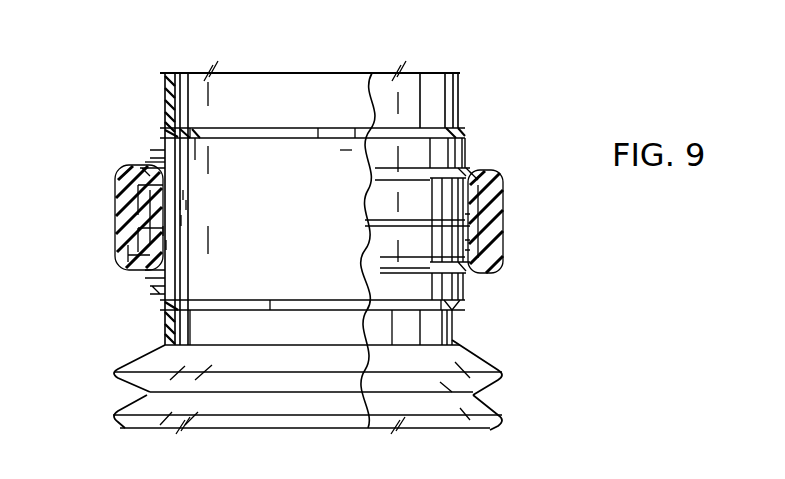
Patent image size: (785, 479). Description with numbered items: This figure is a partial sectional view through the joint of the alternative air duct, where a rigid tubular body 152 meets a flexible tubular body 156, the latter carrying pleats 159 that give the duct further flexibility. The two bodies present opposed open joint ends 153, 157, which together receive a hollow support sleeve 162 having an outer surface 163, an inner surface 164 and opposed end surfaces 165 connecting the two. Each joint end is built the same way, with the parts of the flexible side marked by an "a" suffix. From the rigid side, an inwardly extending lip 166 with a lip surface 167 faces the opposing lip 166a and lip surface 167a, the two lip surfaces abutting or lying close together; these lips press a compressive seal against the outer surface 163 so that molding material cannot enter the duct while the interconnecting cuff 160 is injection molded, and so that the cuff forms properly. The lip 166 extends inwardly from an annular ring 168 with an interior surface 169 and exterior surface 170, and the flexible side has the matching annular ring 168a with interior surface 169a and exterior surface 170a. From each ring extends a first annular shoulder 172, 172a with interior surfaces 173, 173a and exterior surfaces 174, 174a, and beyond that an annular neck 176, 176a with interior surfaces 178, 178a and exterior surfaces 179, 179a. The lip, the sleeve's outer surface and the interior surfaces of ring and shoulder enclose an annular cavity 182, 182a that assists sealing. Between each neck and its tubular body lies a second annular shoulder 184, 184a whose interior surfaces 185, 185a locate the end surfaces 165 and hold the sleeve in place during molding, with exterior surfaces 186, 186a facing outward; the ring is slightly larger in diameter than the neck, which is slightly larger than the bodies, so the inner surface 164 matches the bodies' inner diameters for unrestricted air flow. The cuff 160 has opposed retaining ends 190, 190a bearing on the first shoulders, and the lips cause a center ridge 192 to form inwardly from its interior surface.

The tubular body 152 is at (465, 85).
The open joint end 153 is at (472, 165).
The flexible tubular body 156 is at (505, 370).
The open joint end 157 is at (463, 298).
The pleats 159 is at (478, 410).
The interconnecting cuff 160 is at (507, 238).
The support sleeve 162 is at (200, 128).
The outer surface 163 is at (346, 150).
The inner surface 164 is at (182, 205).
The end surfaces 165 is at (358, 133).
The lip 166 is at (188, 204).
The lip 166a is at (183, 220).
The lip surface 167 is at (397, 225).
The lip surface 167a is at (380, 222).
The annular ring 168 is at (125, 182).
The annular ring 168a is at (135, 250).
The interior surface 169 is at (185, 197).
The interior surface 169a is at (165, 230).
The exterior surface 170 is at (467, 197).
The exterior surface 170a is at (465, 245).
The annular shoulder 172 is at (150, 162).
The annular shoulder 172a is at (160, 278).
The interior surface 173 is at (195, 160).
The interior surface 173a is at (168, 245).
The exterior surface 174 is at (142, 170).
The exterior surface 174a is at (426, 268).
The annular neck 176 is at (158, 152).
The annular neck 176a is at (158, 296).
The interior surface 178 is at (192, 145).
The interior surface 178a is at (192, 300).
The exterior surface 179 is at (470, 153).
The exterior surface 179a is at (441, 300).
The annular cavity 182 is at (158, 198).
The annular cavity 182a is at (158, 233).
The second annular shoulder 184 is at (170, 130).
The second annular shoulder 184a is at (162, 312).
The interior surface 185 is at (323, 130).
The interior surface 185a is at (276, 304).
The exterior surface 186 is at (463, 145).
The exterior surface 186a is at (392, 312).
The retaining end 190 is at (476, 172).
The retaining end 190a is at (468, 274).
The center ridge 192 is at (470, 220).